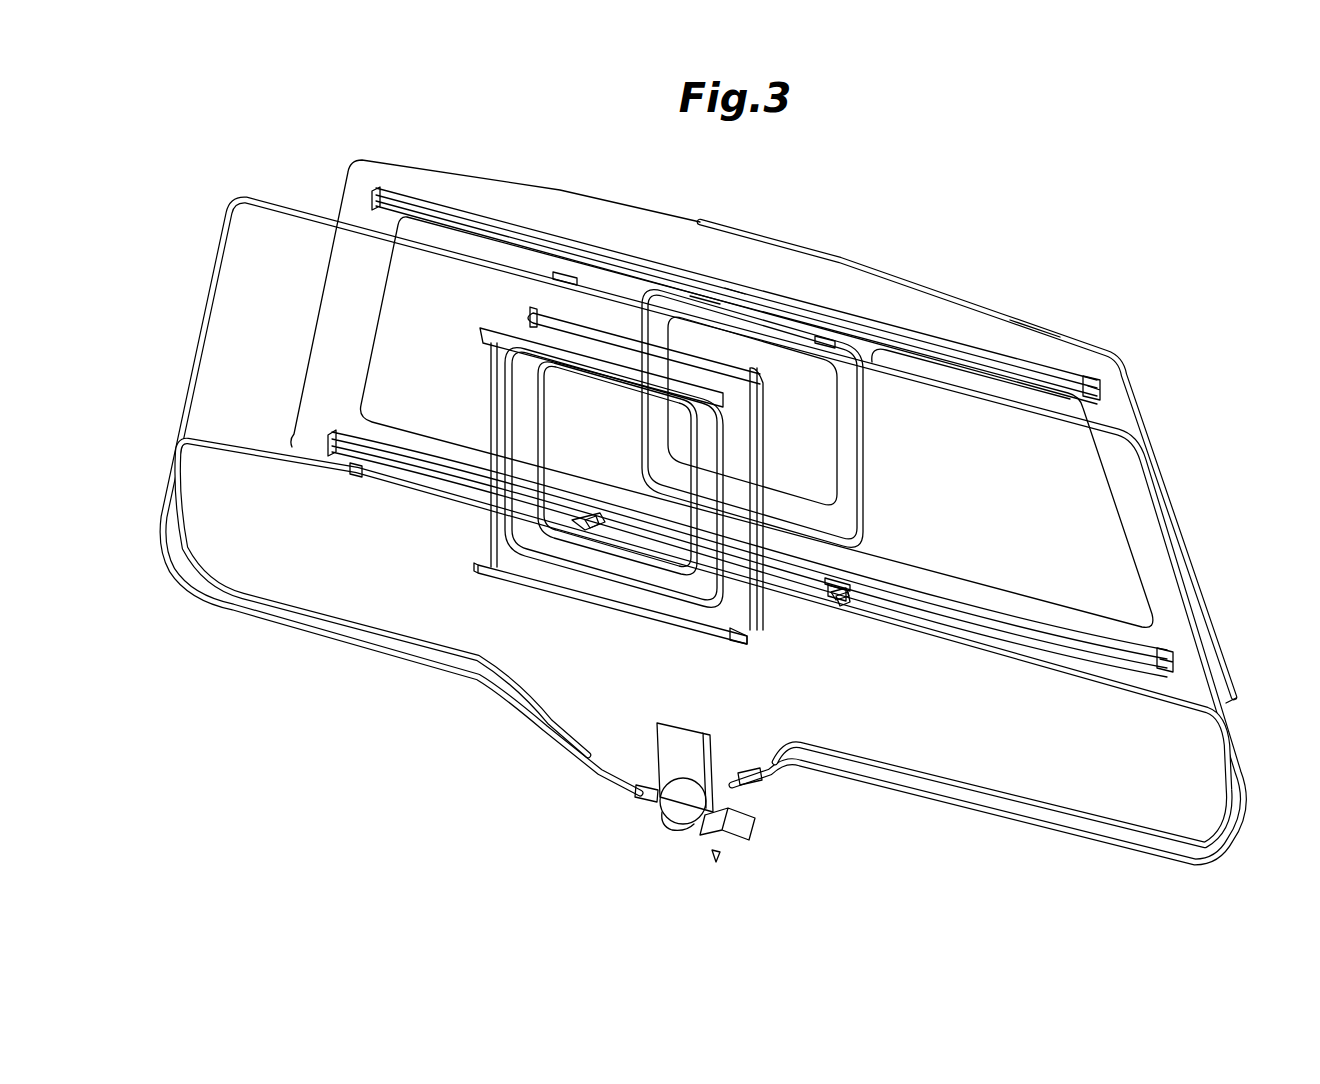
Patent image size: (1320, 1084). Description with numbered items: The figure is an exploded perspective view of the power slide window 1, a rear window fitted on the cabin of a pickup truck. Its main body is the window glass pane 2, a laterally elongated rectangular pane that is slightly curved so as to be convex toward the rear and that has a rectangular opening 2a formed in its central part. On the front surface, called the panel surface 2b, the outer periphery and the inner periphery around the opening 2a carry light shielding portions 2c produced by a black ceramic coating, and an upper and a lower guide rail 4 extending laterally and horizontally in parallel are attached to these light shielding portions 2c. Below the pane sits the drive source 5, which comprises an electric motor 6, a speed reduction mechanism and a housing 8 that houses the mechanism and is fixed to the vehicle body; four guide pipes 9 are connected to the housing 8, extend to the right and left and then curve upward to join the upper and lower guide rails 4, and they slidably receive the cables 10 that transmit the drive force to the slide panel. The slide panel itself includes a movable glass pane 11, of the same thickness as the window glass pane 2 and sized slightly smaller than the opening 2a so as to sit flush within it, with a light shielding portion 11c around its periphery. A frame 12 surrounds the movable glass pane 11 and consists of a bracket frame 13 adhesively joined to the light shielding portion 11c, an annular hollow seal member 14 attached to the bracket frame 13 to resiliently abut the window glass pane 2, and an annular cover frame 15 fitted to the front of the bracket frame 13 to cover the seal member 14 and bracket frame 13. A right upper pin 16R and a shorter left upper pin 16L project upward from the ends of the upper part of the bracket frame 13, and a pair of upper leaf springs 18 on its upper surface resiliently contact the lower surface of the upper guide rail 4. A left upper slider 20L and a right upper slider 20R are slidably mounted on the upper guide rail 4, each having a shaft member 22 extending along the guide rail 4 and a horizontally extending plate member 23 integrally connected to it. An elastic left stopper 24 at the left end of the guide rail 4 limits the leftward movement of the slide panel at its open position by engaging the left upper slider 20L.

The power slide window 1 is at (1131, 232).
The window glass pane 2 is at (957, 304).
The opening 2a is at (850, 313).
The panel surface 2b is at (975, 357).
The light shielding portion 2c is at (1030, 332).
The guide rail 4 is at (1086, 386).
The drive source 5 is at (716, 855).
The electric motor 6 is at (742, 832).
The housing 8 is at (672, 810).
The guide pipe 9 is at (362, 645).
The cable 10 is at (413, 238).
The movable glass pane 11 is at (703, 298).
The light shielding portion 11c is at (735, 292).
The frame 12 is at (640, 630).
The bracket frame 13 is at (740, 628).
The seal member 14 is at (848, 580).
The cover frame 15 is at (685, 620).
The left upper pin 16L is at (550, 275).
The right upper pin 16R is at (765, 335).
The upper leaf spring 18 is at (595, 320).
The left upper slider 20L is at (578, 282).
The right upper slider 20R is at (826, 338).
The shaft member 22 is at (566, 536).
The plate member 23 is at (593, 527).
The left stopper 24 is at (352, 474).